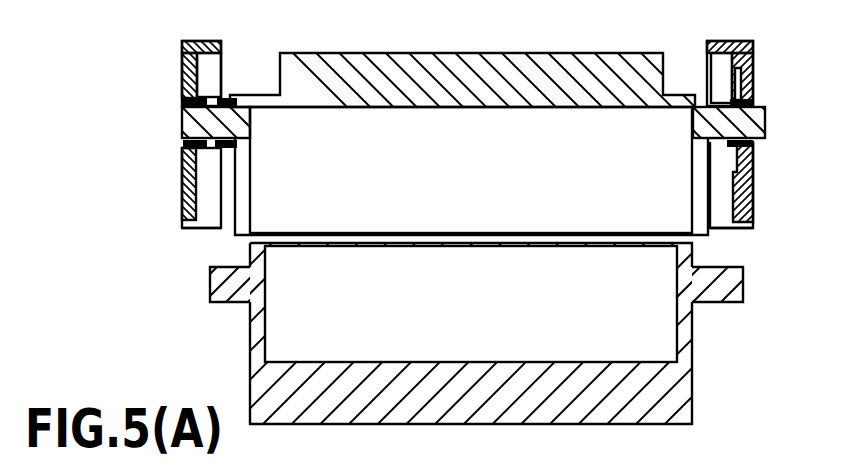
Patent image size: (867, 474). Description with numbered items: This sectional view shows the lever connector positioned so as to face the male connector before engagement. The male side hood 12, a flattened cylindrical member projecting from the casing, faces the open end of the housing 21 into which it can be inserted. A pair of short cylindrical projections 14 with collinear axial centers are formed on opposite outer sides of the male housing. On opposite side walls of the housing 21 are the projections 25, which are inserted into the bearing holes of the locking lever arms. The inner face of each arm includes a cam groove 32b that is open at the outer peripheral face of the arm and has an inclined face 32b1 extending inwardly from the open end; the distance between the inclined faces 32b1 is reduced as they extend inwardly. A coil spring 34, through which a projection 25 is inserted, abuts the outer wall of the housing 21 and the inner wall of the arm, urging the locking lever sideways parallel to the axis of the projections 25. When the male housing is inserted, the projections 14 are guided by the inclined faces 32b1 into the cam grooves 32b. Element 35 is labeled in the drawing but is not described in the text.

The male side hood 12 is at (692, 392).
The short cylindrical projections 14 is at (208, 289).
The housing 21 is at (491, 63).
The projections 25 is at (178, 117).
The cam groove 32b is at (194, 188).
The inclined face 32b1 is at (198, 229).
The coil spring 34 is at (237, 107).
The spring / slot 35 is at (753, 79).